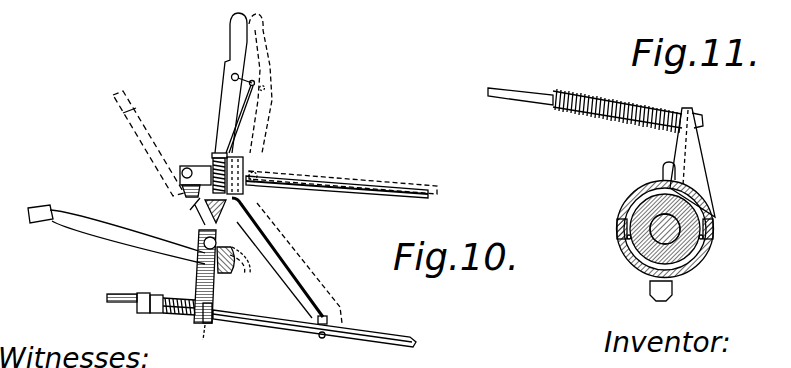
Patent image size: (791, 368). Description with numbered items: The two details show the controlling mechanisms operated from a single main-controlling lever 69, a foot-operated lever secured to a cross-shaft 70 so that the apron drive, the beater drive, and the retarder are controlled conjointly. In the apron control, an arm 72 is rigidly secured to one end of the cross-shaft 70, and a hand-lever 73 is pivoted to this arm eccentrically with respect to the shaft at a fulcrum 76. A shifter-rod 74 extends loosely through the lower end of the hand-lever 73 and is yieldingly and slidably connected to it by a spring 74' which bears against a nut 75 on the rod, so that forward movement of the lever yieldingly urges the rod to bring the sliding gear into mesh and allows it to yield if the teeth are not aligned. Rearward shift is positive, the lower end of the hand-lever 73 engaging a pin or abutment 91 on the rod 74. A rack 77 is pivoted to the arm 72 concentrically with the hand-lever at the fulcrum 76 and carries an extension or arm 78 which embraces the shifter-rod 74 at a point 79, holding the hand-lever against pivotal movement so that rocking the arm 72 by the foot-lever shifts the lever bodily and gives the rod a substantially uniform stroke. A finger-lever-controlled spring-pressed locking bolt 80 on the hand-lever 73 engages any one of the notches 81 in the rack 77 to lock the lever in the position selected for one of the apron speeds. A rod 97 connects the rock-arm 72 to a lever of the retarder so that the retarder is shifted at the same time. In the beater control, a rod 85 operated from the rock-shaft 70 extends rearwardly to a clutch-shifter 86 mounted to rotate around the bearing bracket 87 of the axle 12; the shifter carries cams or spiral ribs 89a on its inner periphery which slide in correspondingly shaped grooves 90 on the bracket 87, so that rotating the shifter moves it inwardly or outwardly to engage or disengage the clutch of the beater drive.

In FIG. 10, the main-controlling lever 69 is at (138, 131).
In FIG. 10, the hand-lever 73 is at (258, 27).
In FIG. 10, the nut 75 is at (227, 107).
In FIG. 10, the locking bolt 80 is at (213, 166).
In FIG. 10, the arm 72 is at (185, 186).
In FIG. 10, the rod 97 is at (414, 197).
In FIG. 10, the notches 81 is at (200, 209).
In FIG. 10, the rack 77 is at (202, 228).
In FIG. 10, the extension or arm 78 is at (286, 273).
In FIG. 10, the pivot or fulcrum 76 is at (232, 254).
In FIG. 10, the cross-shaft 70 is at (221, 275).
In FIG. 10, the rod 74 is at (314, 336).
In FIG. 10, the spring 74' is at (179, 328).
In FIG. 10, the pin or abutment 91 is at (213, 327).
In FIG. 10, the embracing point 79 is at (321, 338).
In FIG. 11, the rod 85 is at (498, 98).
In FIG. 11, the clutch-shifter 86 is at (695, 180).
In FIG. 11, the axle 12 is at (697, 266).
In FIG. 11, the bearing bracket 87 is at (643, 256).
In FIG. 11, the cams or spiral ribs 89a is at (723, 238).
In FIG. 11, the grooves 90 is at (623, 237).